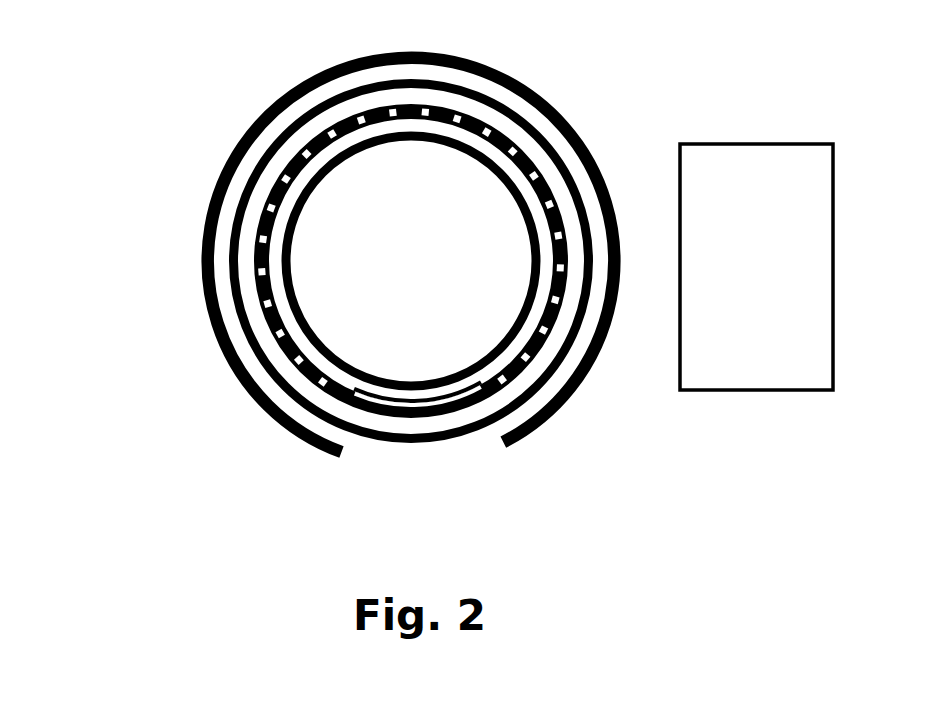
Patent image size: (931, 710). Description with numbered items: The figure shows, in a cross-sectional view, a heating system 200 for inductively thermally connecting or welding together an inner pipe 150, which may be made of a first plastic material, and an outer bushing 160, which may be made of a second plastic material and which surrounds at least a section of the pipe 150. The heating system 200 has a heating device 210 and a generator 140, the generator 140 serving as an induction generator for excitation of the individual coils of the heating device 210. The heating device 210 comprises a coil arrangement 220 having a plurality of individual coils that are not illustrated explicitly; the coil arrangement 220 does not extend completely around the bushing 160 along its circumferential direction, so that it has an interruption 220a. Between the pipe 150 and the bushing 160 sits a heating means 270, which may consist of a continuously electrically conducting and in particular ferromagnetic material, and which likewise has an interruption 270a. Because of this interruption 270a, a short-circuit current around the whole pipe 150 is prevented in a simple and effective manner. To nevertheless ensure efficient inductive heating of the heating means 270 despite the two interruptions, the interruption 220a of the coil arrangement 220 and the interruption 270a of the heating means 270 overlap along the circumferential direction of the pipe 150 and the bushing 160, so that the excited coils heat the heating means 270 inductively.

The heating system 200 is at (700, 425).
The heating device 210 is at (200, 66).
The coil arrangement 220 is at (238, 140).
The interruption 220a is at (491, 473).
The bushing 160 is at (247, 207).
The heating means 270 is at (488, 143).
The interruption 270a is at (400, 413).
The pipe 150 is at (548, 257).
The generator 140 is at (781, 283).